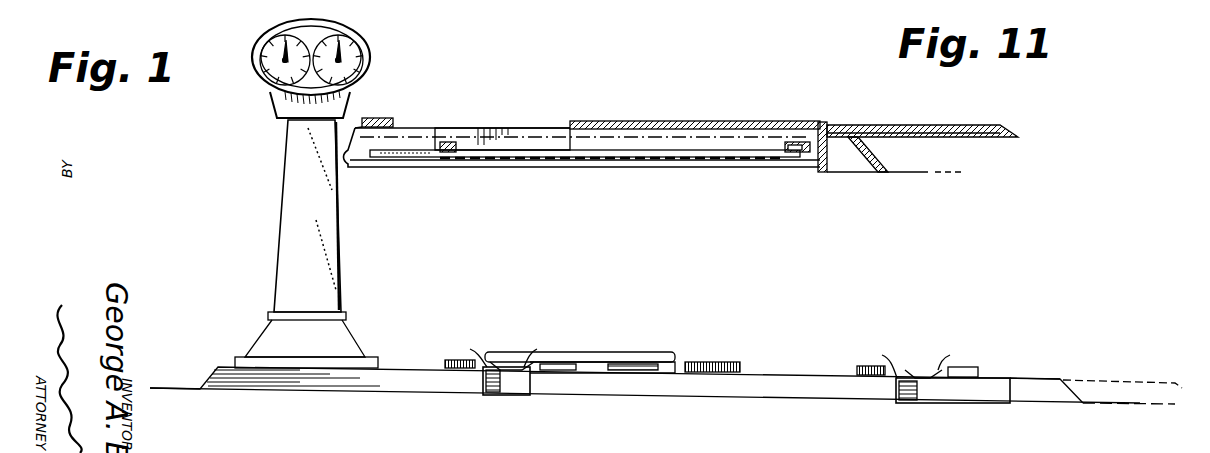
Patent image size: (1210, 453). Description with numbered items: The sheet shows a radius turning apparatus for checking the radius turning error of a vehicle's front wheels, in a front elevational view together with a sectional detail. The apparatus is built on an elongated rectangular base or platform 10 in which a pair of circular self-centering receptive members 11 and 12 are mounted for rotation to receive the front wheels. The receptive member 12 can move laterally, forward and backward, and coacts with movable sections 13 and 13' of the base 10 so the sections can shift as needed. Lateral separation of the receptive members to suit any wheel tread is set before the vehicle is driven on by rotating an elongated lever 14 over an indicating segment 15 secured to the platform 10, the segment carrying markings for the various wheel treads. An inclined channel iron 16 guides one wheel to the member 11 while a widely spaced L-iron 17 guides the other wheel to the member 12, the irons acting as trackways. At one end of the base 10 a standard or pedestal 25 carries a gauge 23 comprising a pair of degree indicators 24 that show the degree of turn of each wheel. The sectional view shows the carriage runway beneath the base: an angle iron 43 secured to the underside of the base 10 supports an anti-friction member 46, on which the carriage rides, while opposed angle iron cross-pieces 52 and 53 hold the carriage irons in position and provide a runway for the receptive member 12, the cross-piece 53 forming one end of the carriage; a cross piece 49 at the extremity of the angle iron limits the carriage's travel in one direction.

In FIG. 1, the base or platform 10 is at (437, 391).
In FIG. 11, the base or platform 10 is at (886, 164).
In FIG. 1, the receptive member 11 is at (447, 360).
In FIG. 1, the receptive member 12 is at (978, 370).
In FIG. 1, the movable section 13 is at (1096, 377).
In FIG. 11, the movable section 13' is at (922, 136).
In FIG. 1, the elongated lever 14 is at (565, 355).
In FIG. 1, the indicating segment 15 is at (740, 365).
In FIG. 1, the inclined channel iron 16 is at (510, 396).
In FIG. 1, the L-iron 17 is at (972, 398).
In FIG. 1, the gauge 23 is at (312, 32).
In FIG. 1, the degree indicator 24 is at (270, 42).
In FIG. 1, the standard or pedestal 25 is at (282, 234).
In FIG. 11, the angle iron 43 is at (758, 165).
In FIG. 11, the anti-friction member 46 is at (664, 163).
In FIG. 11, the cross piece or angle iron 49 is at (806, 170).
In FIG. 11, the angle iron cross-piece 52 is at (572, 142).
In FIG. 11, the angle iron cross-piece 53 is at (786, 157).